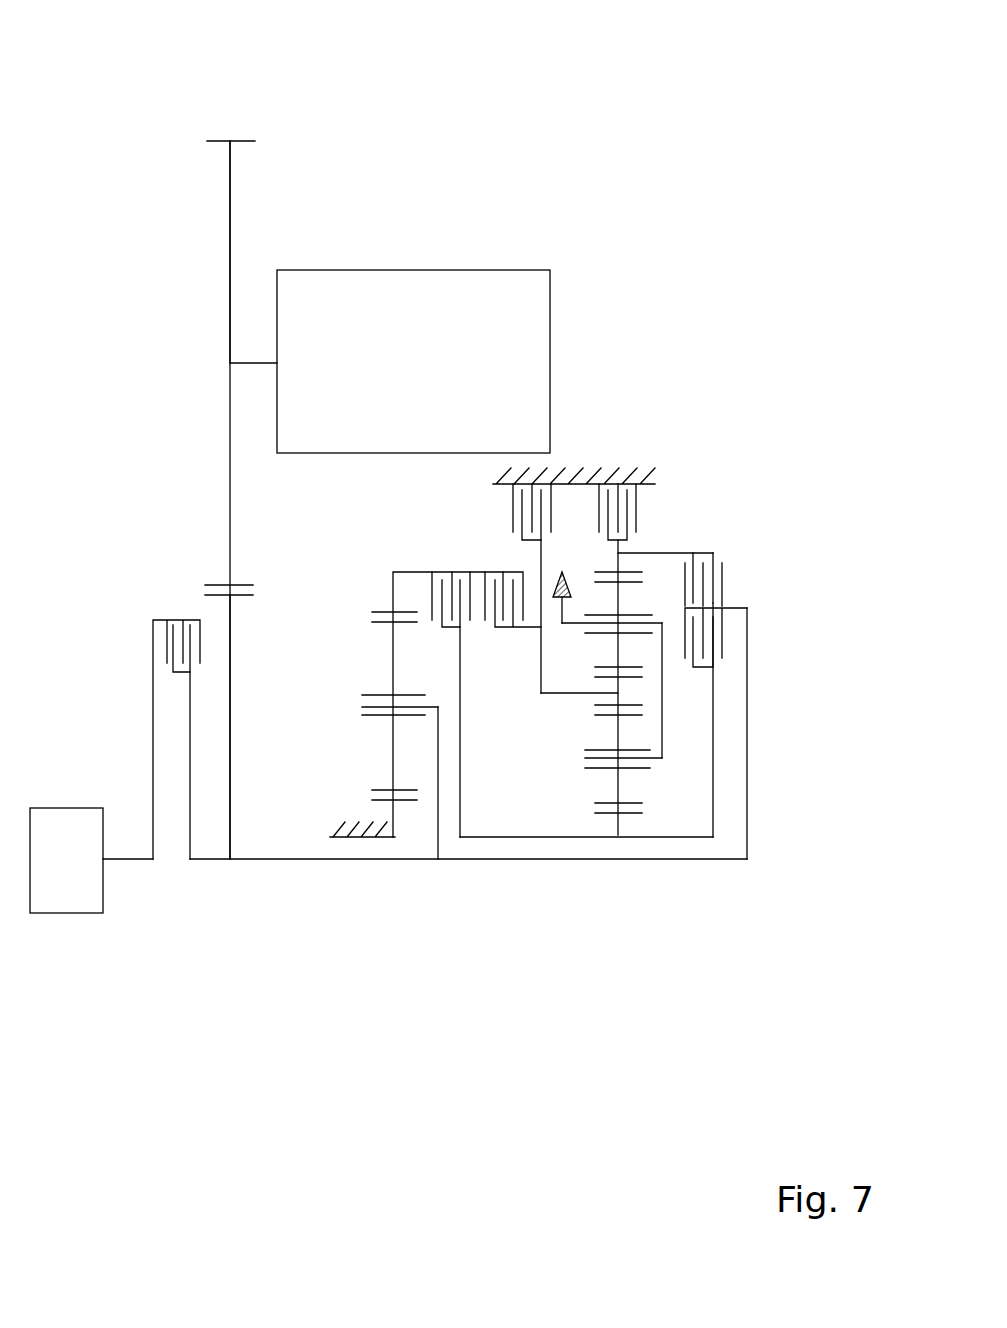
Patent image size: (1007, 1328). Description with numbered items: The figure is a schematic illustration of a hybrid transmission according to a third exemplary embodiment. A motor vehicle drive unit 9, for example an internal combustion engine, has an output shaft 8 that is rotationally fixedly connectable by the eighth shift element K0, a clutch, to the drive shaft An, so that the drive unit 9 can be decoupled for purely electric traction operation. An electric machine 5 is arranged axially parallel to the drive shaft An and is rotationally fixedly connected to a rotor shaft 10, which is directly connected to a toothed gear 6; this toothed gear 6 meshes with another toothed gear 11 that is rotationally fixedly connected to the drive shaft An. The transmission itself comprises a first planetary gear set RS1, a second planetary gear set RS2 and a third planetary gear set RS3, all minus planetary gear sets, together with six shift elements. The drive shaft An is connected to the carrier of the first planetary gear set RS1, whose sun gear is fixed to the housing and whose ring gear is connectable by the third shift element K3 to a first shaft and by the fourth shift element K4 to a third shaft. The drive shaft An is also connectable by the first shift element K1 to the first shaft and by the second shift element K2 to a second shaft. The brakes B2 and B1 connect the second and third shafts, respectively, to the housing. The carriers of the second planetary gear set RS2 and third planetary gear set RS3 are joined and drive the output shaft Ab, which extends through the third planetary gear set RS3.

The electric machine 5 is at (503, 298).
The toothed gear 6 is at (230, 226).
The output shaft 8 is at (153, 826).
The motor vehicle drive unit 9 is at (78, 900).
The rotor shaft 10 is at (253, 362).
The toothed gear 11 is at (230, 808).
The eighth shift element K0 is at (178, 610).
The first shift element K1 is at (724, 632).
The second shift element K2 is at (724, 583).
The third shift element K3 is at (444, 567).
The fourth shift element K4 is at (499, 567).
The sixth shift element B1 is at (553, 517).
The fifth shift element B2 is at (641, 505).
The first planetary gear set RS1 is at (395, 868).
The second planetary gear set RS2 is at (618, 868).
The third planetary gear set RS3 is at (623, 802).
The drive shaft An is at (334, 838).
The output shaft Ab is at (606, 583).